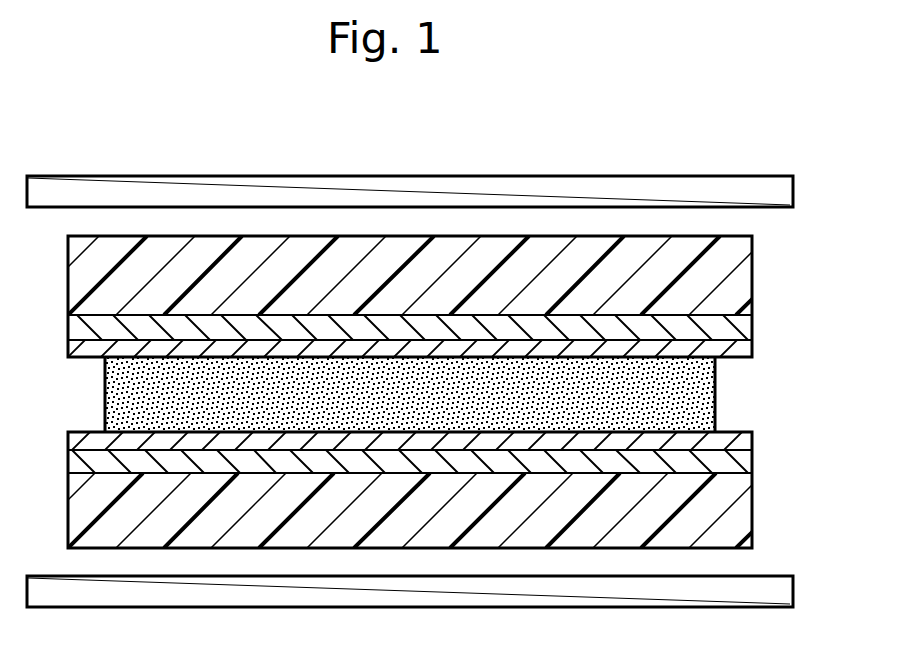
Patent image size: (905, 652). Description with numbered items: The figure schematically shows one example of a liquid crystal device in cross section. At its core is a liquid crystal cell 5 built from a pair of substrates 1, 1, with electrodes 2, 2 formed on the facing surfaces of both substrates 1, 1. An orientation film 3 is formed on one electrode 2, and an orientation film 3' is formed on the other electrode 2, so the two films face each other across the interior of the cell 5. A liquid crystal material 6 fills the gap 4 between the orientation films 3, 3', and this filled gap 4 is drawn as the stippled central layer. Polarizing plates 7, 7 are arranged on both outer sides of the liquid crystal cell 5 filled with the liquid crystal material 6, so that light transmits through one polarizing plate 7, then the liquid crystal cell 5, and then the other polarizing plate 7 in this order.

The substrate 1 is at (725, 272).
The electrode 2 is at (727, 325).
The orientation film 3 is at (438, 346).
The orientation film 3' is at (444, 438).
The gap 4 is at (755, 355).
The liquid crystal cell 5 is at (817, 258).
The liquid crystal material 6 is at (400, 403).
The polarizing plate 7 is at (773, 192).